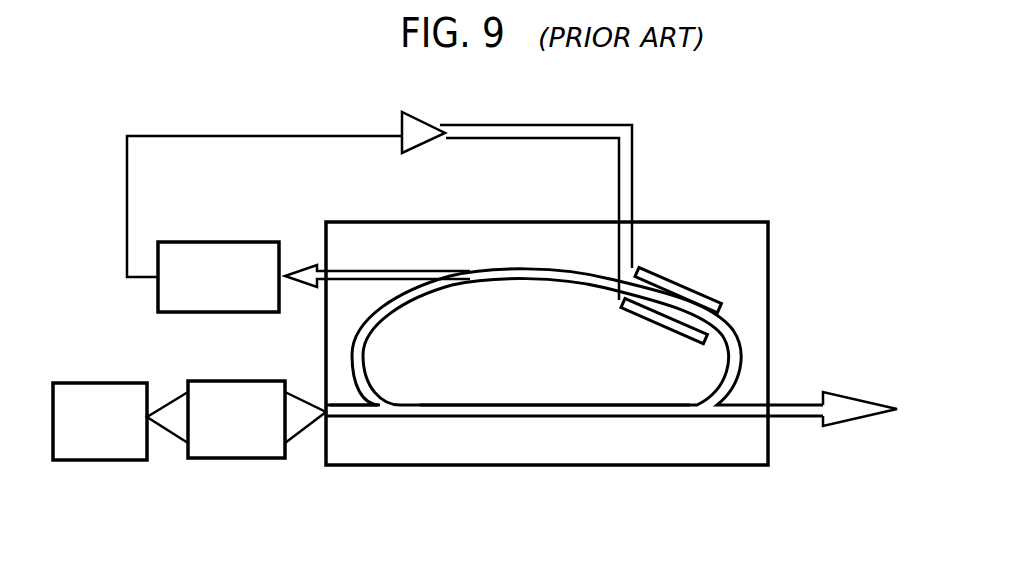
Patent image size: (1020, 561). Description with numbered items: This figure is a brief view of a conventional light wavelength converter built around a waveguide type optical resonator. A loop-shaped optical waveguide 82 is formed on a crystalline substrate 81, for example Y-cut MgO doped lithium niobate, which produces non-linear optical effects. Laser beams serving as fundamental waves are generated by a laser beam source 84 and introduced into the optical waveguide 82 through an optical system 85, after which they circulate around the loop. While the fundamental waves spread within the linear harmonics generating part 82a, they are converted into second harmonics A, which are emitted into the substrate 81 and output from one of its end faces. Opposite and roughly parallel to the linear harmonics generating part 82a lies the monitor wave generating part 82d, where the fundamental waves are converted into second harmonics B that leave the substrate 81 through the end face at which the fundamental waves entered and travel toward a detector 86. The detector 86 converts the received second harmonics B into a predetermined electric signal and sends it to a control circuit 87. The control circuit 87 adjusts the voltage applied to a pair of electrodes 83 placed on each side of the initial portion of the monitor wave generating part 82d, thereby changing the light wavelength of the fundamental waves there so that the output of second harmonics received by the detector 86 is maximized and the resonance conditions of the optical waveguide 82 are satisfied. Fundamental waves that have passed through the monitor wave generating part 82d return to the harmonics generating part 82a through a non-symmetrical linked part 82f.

The crystalline substrate 81 is at (736, 452).
The loop-shaped optical waveguide 82 is at (574, 394).
The linear harmonics generating part 82a is at (543, 404).
The monitor wave generating part 82d is at (533, 277).
The non-symmetrical linked part 82f is at (402, 404).
The electrodes 83 is at (701, 294).
The laser beam source 84 is at (129, 462).
The optical system 85 is at (237, 460).
The detector 86 is at (235, 244).
The control circuit 87 is at (418, 120).